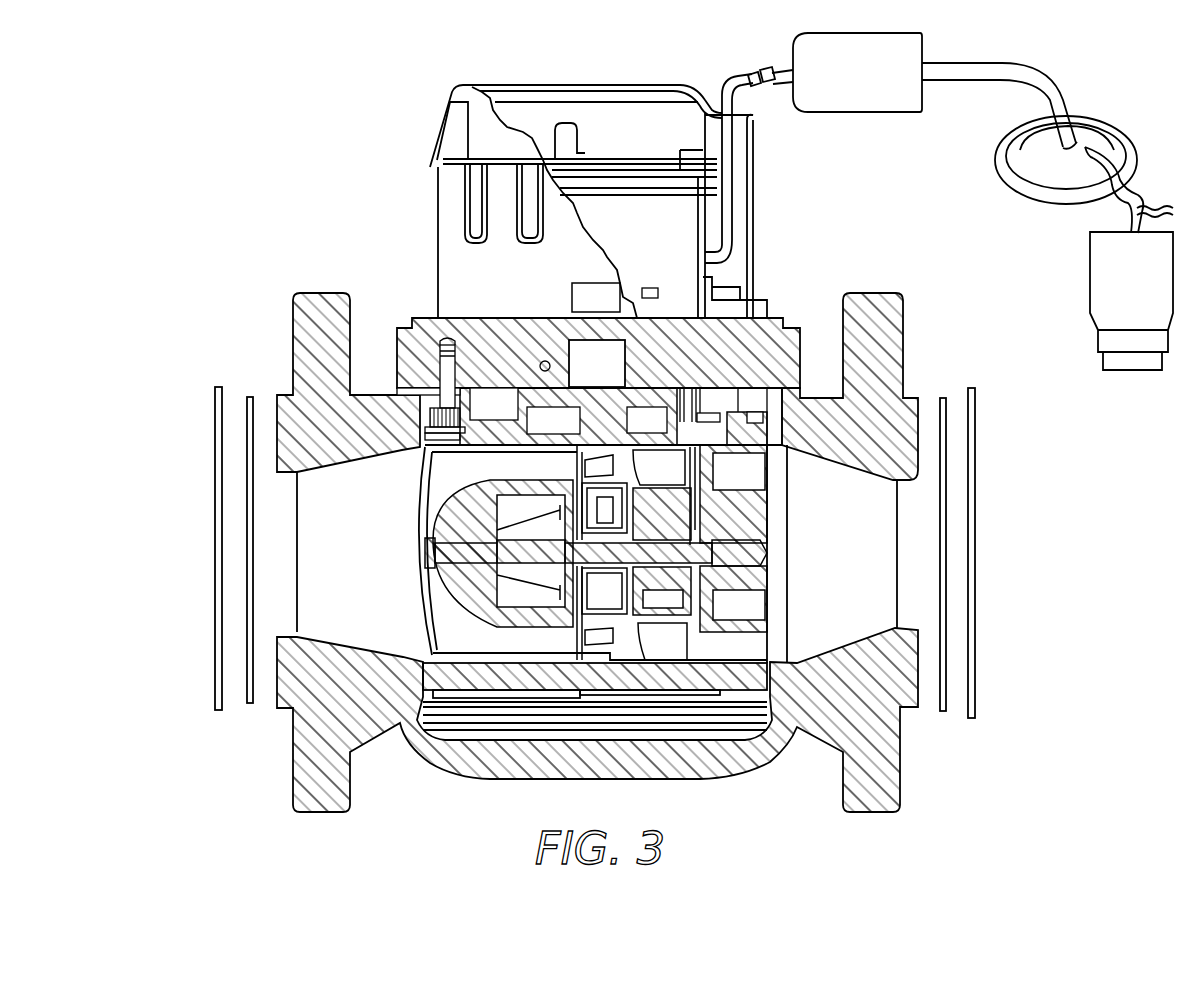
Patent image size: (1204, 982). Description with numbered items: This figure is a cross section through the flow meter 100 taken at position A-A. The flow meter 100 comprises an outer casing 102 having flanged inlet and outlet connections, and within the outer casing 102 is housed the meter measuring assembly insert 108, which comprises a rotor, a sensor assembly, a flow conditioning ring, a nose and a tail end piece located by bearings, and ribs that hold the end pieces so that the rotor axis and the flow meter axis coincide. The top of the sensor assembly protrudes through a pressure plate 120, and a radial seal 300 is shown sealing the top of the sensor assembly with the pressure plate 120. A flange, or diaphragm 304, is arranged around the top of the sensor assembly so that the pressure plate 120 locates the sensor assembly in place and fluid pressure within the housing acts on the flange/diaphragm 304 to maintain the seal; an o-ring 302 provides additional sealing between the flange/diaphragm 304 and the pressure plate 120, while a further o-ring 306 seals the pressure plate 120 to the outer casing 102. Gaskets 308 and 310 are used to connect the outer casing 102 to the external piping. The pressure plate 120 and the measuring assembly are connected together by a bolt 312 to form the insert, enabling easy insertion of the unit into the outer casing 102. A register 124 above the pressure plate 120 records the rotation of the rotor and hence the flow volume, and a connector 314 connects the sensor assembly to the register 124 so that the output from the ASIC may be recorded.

The flow meter 100 is at (343, 113).
The outer casing 102 is at (302, 293).
The meter measuring assembly insert 108 is at (425, 600).
The pressure plate 120 is at (428, 318).
The register 124 is at (757, 241).
The radial seal 300 is at (546, 360).
The o-ring 302 is at (520, 378).
The flange/diaphragm 304 is at (596, 408).
The o-ring 306 is at (413, 388).
The gasket 308 is at (249, 704).
The gasket 310 is at (215, 388).
The bolt 312 is at (443, 396).
The connector 314 is at (568, 298).